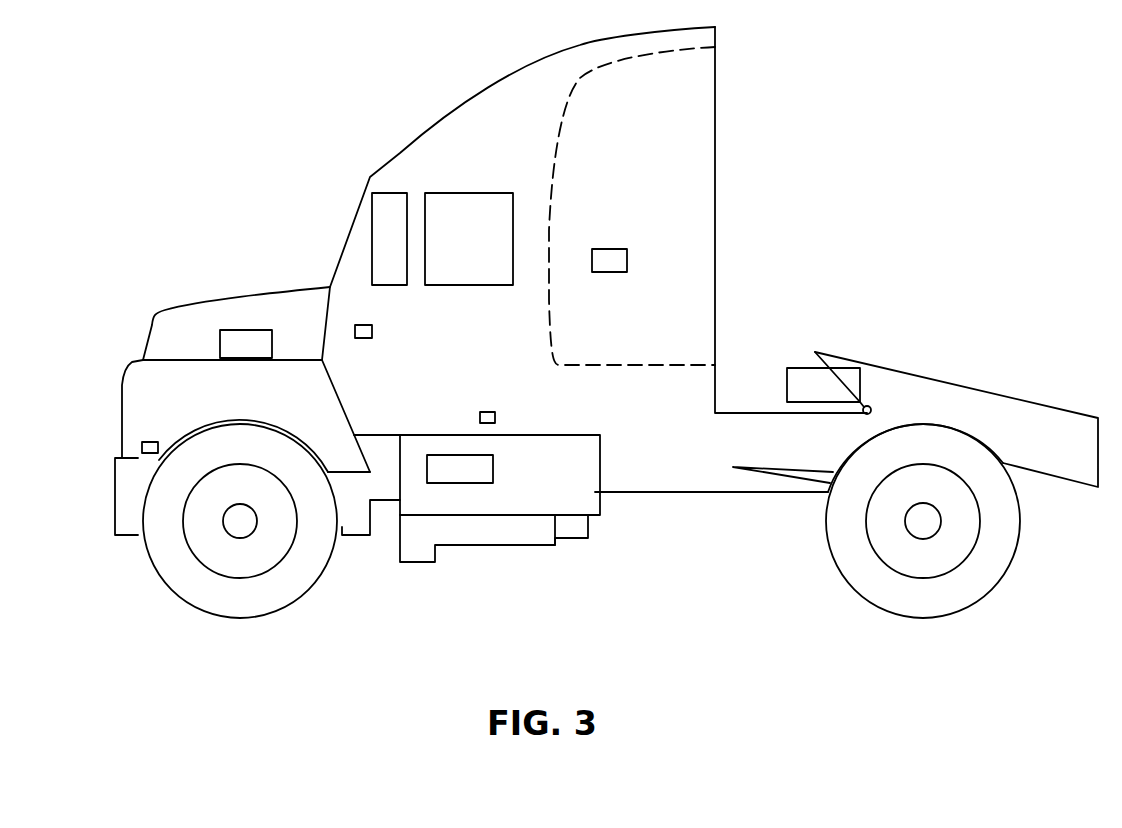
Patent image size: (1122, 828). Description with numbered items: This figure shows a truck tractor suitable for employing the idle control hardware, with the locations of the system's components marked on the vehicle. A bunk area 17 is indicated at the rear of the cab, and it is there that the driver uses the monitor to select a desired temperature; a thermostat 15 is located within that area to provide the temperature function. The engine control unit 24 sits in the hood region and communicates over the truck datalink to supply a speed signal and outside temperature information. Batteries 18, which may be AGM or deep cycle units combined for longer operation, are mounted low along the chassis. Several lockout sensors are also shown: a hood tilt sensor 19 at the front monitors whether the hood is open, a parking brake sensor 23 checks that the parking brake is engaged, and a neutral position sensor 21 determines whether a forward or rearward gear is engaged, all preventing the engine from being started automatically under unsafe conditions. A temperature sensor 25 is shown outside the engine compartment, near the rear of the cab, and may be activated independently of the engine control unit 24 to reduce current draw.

The thermostat 15 is at (617, 260).
The bunk area 17 is at (677, 50).
The batteries 18 is at (480, 473).
The hood tilt sensor 19 is at (142, 447).
The neutral position sensor 21 is at (495, 416).
The parking brake sensor 23 is at (372, 332).
The engine control unit 24 is at (242, 338).
The temperature sensor 25 is at (869, 406).